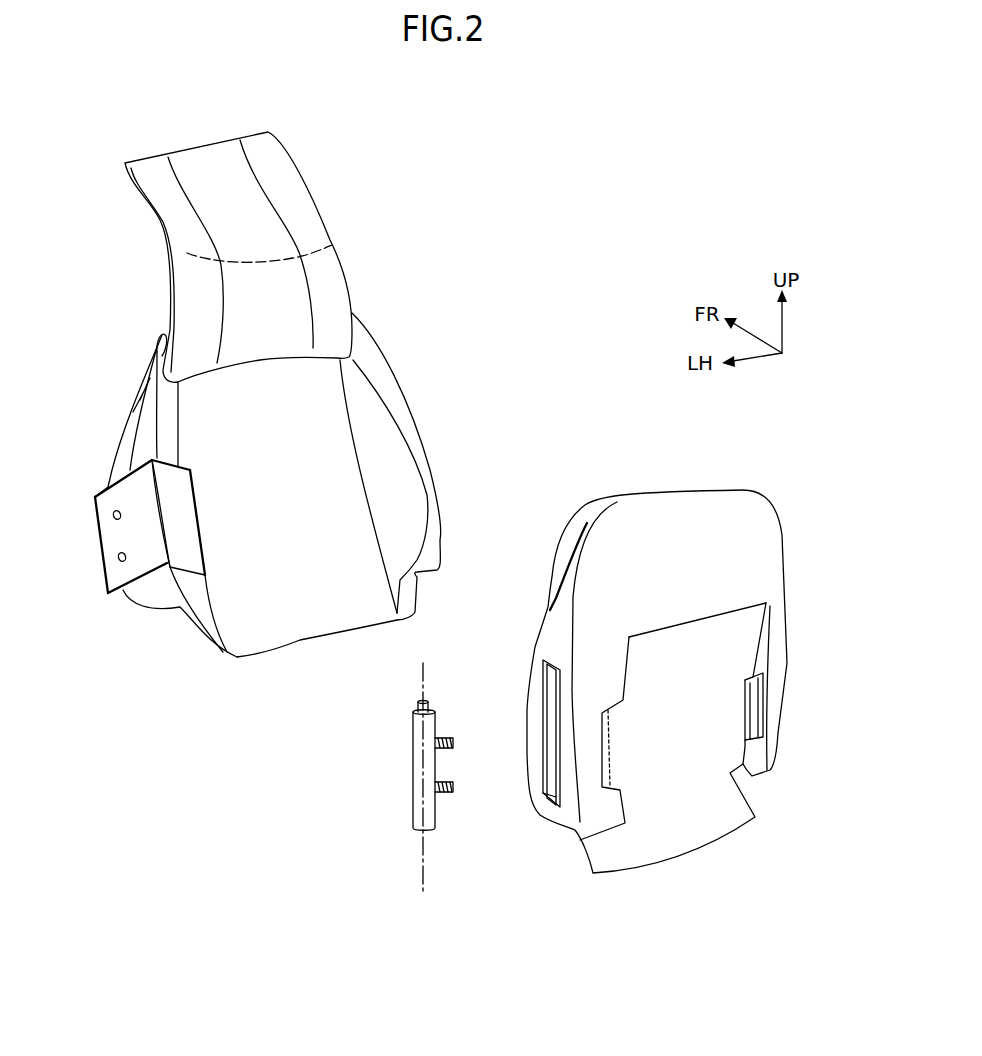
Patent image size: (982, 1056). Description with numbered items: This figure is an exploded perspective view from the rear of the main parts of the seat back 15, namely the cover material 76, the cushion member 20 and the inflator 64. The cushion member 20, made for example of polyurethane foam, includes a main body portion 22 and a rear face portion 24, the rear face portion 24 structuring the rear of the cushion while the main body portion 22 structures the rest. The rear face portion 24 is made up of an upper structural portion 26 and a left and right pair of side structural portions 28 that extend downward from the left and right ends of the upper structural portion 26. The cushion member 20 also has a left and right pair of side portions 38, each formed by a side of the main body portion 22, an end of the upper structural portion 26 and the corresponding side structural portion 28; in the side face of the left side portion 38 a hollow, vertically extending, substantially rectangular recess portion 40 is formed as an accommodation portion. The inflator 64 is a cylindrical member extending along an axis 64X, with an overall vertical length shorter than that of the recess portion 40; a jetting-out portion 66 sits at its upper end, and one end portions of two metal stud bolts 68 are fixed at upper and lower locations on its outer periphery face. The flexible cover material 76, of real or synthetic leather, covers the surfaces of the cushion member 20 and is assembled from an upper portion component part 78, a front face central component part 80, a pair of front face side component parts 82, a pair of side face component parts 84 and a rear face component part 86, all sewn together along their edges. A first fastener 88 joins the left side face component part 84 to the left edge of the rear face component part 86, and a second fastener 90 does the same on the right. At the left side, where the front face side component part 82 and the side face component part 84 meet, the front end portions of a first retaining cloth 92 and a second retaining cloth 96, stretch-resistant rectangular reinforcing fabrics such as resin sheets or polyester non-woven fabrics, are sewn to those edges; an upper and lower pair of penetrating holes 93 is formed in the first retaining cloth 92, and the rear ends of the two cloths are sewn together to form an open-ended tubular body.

The seat back 15 is at (600, 272).
The cushion member 20 is at (677, 666).
The main body portion 22 is at (572, 534).
The rear face portion 24 is at (718, 560).
The upper structural portion 26 is at (704, 526).
The side structural portions 28 is at (772, 641).
The side portions 38 is at (774, 660).
The recess portion 40 is at (554, 696).
The inflator 64 is at (421, 778).
The axis 64X is at (420, 873).
The jetting-out portion 66 is at (418, 703).
The stud bolts 68 is at (455, 741).
The cover material 76 is at (460, 512).
The upper portion component part 78 is at (164, 332).
The front face central component part 80 is at (316, 624).
The front face side component parts 82 is at (408, 481).
The side face component parts 84 is at (386, 390).
The rear face component part 86 is at (292, 190).
The first fastener 88 is at (142, 204).
The second fastener 90 is at (330, 215).
The first retaining cloth 92 is at (108, 557).
The penetrating holes 93 is at (111, 514).
The second retaining cloth 96 is at (185, 522).